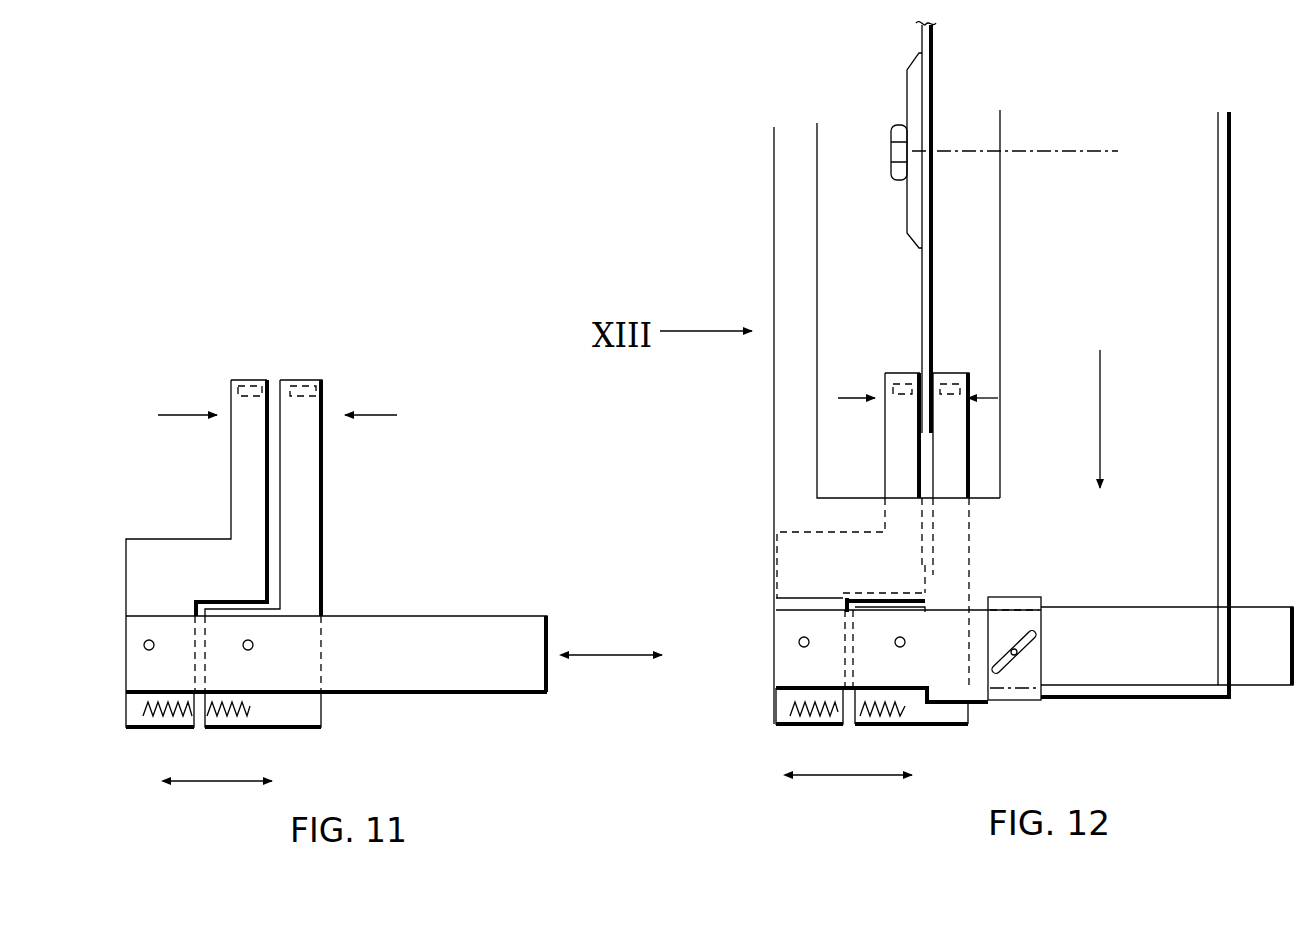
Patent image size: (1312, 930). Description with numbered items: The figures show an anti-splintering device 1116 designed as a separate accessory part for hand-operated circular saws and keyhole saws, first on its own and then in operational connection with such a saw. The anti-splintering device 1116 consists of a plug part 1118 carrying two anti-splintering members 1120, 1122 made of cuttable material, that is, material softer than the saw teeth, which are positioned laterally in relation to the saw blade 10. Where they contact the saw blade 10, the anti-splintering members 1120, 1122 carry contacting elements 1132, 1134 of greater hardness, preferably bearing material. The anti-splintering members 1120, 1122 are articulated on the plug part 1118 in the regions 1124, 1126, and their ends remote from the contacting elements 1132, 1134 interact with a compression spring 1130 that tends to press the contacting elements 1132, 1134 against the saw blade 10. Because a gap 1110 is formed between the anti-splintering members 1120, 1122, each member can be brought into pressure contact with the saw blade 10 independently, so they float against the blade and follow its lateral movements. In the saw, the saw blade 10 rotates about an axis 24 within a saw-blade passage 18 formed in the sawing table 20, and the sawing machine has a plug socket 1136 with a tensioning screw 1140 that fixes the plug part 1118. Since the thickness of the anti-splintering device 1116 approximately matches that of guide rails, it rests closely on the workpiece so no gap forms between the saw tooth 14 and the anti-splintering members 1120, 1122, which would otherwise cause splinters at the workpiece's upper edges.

In FIG. 12, the saw blade 10 is at (933, 275).
In FIG. 12, the teeth 14 is at (916, 419).
In FIG. 12, the saw-blade passage 18 is at (1000, 205).
In FIG. 12, the sawing table 20 is at (1232, 343).
In FIG. 12, the axis 24 is at (1053, 150).
In FIG. 11, the gap 1110 is at (276, 557).
In FIG. 12, the gap 1110 is at (888, 555).
In FIG. 11, the anti-splintering device 1116 is at (276, 340).
In FIG. 11, the plug part 1118 is at (467, 672).
In FIG. 11, the anti-splintering member 1120 is at (305, 488).
In FIG. 12, the anti-splintering member 1120 is at (952, 450).
In FIG. 11, the anti-splintering member 1122 is at (243, 489).
In FIG. 12, the anti-splintering member 1122 is at (900, 450).
In FIG. 11, the articulation region 1124 is at (143, 645).
In FIG. 11, the articulation region 1126 is at (254, 645).
In FIG. 11, the compression spring 1130 is at (168, 722).
In FIG. 12, the compression spring 1130 is at (812, 712).
In FIG. 11, the contacting element 1132 is at (312, 388).
In FIG. 12, the contacting element 1132 is at (948, 380).
In FIG. 11, the contacting element 1134 is at (248, 388).
In FIG. 12, the contacting element 1134 is at (903, 380).
In FIG. 12, the plug socket 1136 is at (1020, 680).
In FIG. 12, the tensioning screw 1140 is at (1035, 636).